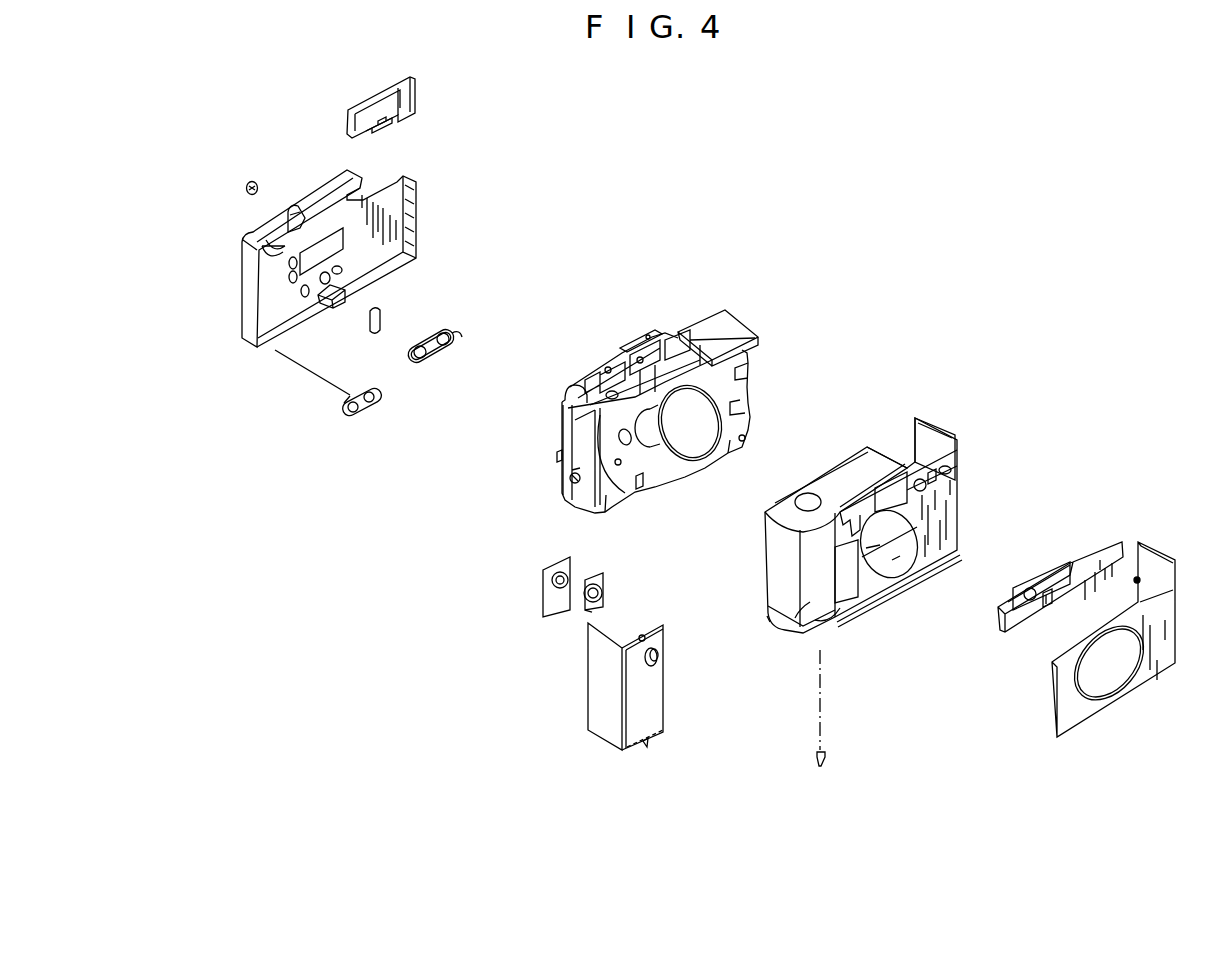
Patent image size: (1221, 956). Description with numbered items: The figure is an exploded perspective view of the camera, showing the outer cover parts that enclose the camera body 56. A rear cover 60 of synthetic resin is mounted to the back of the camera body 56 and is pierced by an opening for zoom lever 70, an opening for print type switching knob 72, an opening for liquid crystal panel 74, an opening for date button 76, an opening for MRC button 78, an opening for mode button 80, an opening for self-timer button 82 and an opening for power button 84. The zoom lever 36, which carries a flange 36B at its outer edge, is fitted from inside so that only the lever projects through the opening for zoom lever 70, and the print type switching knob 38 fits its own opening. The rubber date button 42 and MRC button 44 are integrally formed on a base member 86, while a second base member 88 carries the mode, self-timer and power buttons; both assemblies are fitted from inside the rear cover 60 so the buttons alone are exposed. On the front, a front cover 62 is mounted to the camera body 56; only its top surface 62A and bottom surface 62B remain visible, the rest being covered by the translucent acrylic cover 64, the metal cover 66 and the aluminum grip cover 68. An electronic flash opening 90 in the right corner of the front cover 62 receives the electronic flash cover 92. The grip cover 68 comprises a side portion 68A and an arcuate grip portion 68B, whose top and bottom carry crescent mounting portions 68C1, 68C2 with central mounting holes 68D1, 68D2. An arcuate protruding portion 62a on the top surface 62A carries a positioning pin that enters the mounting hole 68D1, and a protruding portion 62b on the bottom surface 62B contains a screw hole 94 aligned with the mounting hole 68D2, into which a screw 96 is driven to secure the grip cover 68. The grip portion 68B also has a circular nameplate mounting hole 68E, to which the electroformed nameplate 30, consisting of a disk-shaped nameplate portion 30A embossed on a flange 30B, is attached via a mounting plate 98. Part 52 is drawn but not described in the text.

The nameplate 30 is at (580, 592).
The nameplate portion 30A is at (585, 614).
The flange 30B is at (586, 578).
The zoom lever 36 is at (367, 410).
The flange 36B is at (348, 408).
The print type switching knob 38 is at (246, 186).
The date button 42 is at (382, 318).
The MRC button 44 is at (371, 322).
The cover piece 52 is at (394, 95).
The camera body 56 is at (632, 391).
The rear cover 60 is at (306, 277).
The front cover 62 is at (894, 559).
The top surface 62A is at (850, 462).
The bottom surface 62B is at (882, 602).
The protruding portion 62a is at (830, 498).
The protruding portion 62b is at (832, 642).
The acrylic cover 64 is at (1054, 558).
The metal cover 66 is at (1068, 740).
The grip cover 68 is at (624, 702).
The side portion 68A is at (596, 694).
The grip portion 68B is at (658, 712).
The mounting portion 68C1 is at (664, 625).
The mounting portion 68C2 is at (636, 752).
The mounting hole 68D1 is at (643, 633).
The mounting hole 68D2 is at (648, 745).
The nameplate mounting hole 68E is at (660, 655).
The opening for zoom lever 70 is at (246, 240).
The opening for print type switching knob 72 is at (290, 210).
The opening for liquid crystal panel 74 is at (350, 236).
The opening for date button 76 is at (288, 265).
The opening for MRC button 78 is at (335, 274).
The opening for mode button 80 is at (342, 271).
The opening for self-timer button 82 is at (333, 308).
The opening for power button 84 is at (305, 297).
The base member 86 is at (378, 330).
The base member 88 is at (452, 350).
The electronic flash opening 90 is at (925, 418).
The electronic flash cover 92 is at (742, 328).
The screw hole 94 is at (812, 635).
The screw 96 is at (826, 760).
The mounting plate 98 is at (556, 575).